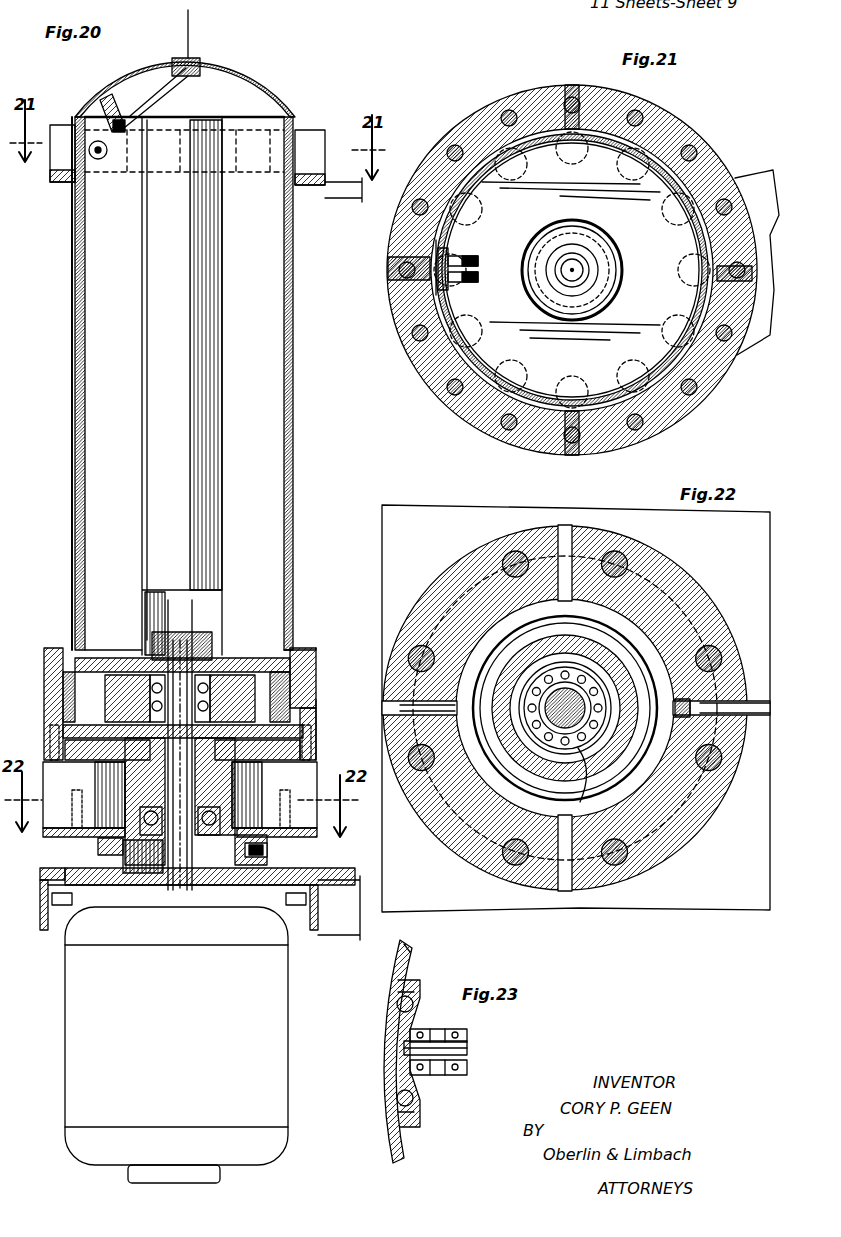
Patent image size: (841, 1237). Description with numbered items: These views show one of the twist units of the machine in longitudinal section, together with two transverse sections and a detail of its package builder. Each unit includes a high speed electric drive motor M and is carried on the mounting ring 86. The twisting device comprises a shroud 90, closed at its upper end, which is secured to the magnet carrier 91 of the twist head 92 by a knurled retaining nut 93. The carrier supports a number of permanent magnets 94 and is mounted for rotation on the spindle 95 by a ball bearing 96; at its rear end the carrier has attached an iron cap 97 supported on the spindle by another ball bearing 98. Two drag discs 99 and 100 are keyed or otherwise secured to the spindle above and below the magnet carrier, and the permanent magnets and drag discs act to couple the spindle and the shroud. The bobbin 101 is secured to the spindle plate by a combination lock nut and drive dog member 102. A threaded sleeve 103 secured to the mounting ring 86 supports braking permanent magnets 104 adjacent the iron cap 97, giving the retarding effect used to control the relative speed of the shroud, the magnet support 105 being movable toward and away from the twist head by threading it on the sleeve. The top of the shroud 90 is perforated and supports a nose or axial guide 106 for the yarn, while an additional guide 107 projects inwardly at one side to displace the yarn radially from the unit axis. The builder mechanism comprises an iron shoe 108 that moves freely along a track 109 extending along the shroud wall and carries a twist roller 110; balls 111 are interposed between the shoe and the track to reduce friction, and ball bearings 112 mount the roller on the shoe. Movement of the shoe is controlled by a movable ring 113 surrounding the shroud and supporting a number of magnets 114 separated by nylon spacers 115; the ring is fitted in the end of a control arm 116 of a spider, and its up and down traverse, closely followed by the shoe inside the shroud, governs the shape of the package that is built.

In FIG. 22, the mounting ring 86 is at (576, 708).
In FIG. 20, the shroud 90 is at (293, 326).
In FIG. 21, the shroud 90 is at (702, 300).
In FIG. 23, the shroud 90 is at (392, 978).
In FIG. 20, the magnet carrier 91 is at (45, 705).
In FIG. 20, the twist head 92 is at (312, 712).
In FIG. 20, the knurled retaining nut 93 is at (292, 650).
In FIG. 20, the permanent magnets 94 is at (92, 652).
In FIG. 20, the spindle 95 is at (122, 852).
In FIG. 21, the spindle 95 is at (552, 280).
In FIG. 20, the ball bearing 96 is at (212, 672).
In FIG. 20, the iron cap 97 is at (302, 750).
In FIG. 22, the iron cap 97 is at (622, 668).
In FIG. 20, the ball bearing 98 is at (196, 832).
In FIG. 22, the ball bearing 98 is at (565, 742).
In FIG. 20, the drag disc 99 is at (85, 660).
In FIG. 20, the drag disc 100 is at (302, 730).
In FIG. 20, the bobbin 101 is at (224, 488).
In FIG. 21, the bobbin 101 is at (600, 310).
In FIG. 20, the combination lock nut and drive dog member 102 is at (205, 634).
In FIG. 20, the threaded sleeve 103 is at (250, 868).
In FIG. 22, the threaded sleeve 103 is at (526, 786).
In FIG. 20, the braking permanent magnets 104 is at (316, 775).
In FIG. 22, the braking permanent magnets 104 is at (622, 600).
In FIG. 20, the magnet support 105 is at (308, 842).
In FIG. 20, the nose or axial guide 106 is at (200, 66).
In FIG. 20, the guide 107 is at (118, 90).
In FIG. 21, the iron shoe 108 is at (452, 282).
In FIG. 23, the iron shoe 108 is at (396, 1026).
In FIG. 20, the track 109 is at (75, 296).
In FIG. 21, the track 109 is at (440, 244).
In FIG. 23, the track 109 is at (410, 984).
In FIG. 20, the twist roller 110 is at (100, 165).
In FIG. 21, the twist roller 110 is at (478, 258).
In FIG. 23, the twist roller 110 is at (467, 1049).
In FIG. 23, the balls 111 is at (414, 1015).
In FIG. 23, the ball bearings 112 is at (448, 1030).
In FIG. 21, the movable ring 113 is at (695, 160).
In FIG. 20, the magnets 114 is at (60, 125).
In FIG. 21, the magnets 114 is at (458, 132).
In FIG. 21, the nylon spacers 115 is at (575, 85).
In FIG. 20, the control arm 116 is at (325, 200).
In FIG. 21, the control arm 116 is at (778, 212).
In FIG. 20, the electric drive motor M is at (282, 1000).